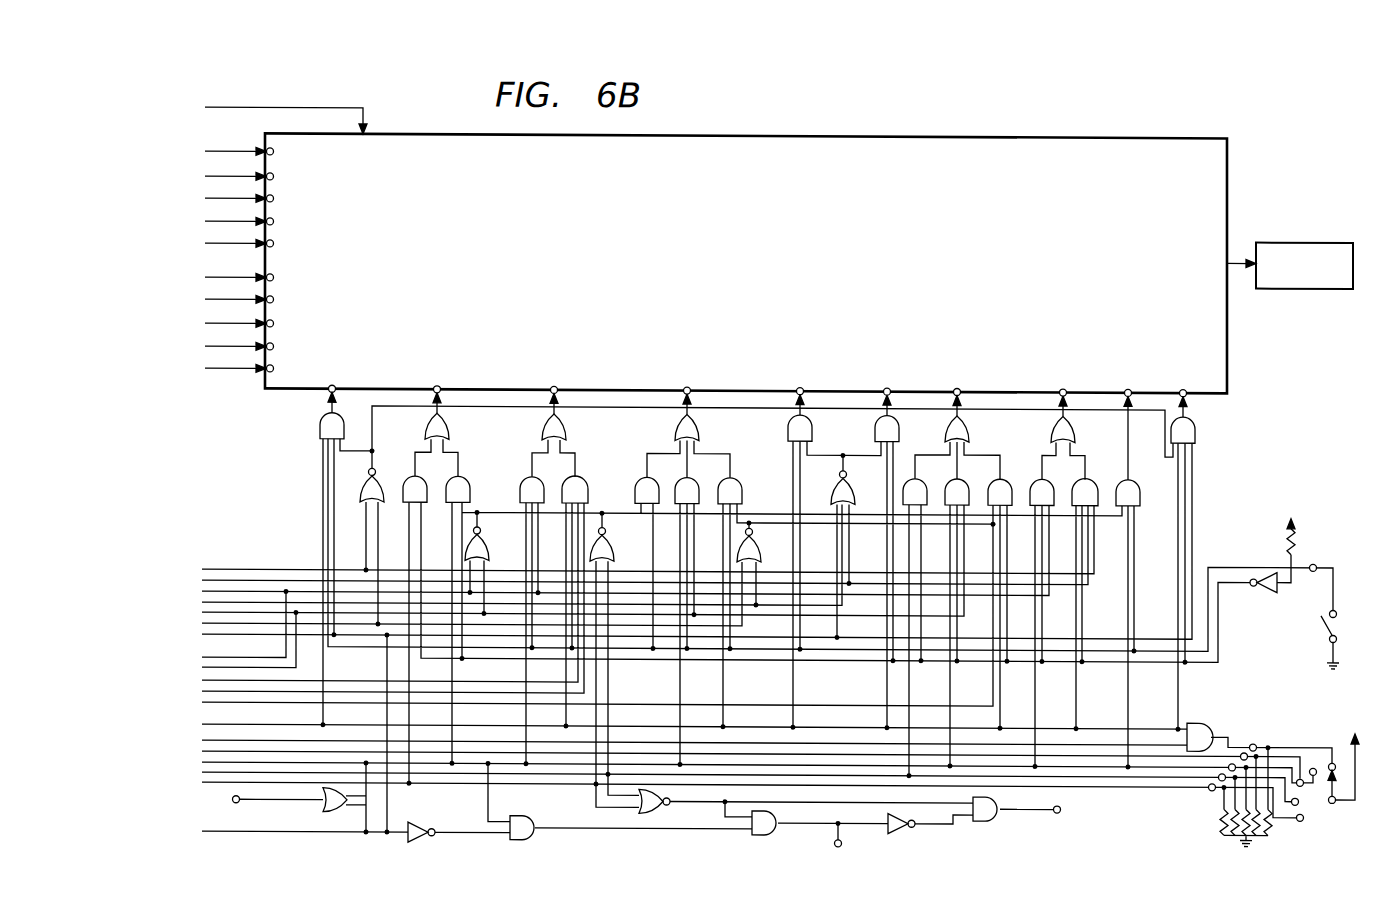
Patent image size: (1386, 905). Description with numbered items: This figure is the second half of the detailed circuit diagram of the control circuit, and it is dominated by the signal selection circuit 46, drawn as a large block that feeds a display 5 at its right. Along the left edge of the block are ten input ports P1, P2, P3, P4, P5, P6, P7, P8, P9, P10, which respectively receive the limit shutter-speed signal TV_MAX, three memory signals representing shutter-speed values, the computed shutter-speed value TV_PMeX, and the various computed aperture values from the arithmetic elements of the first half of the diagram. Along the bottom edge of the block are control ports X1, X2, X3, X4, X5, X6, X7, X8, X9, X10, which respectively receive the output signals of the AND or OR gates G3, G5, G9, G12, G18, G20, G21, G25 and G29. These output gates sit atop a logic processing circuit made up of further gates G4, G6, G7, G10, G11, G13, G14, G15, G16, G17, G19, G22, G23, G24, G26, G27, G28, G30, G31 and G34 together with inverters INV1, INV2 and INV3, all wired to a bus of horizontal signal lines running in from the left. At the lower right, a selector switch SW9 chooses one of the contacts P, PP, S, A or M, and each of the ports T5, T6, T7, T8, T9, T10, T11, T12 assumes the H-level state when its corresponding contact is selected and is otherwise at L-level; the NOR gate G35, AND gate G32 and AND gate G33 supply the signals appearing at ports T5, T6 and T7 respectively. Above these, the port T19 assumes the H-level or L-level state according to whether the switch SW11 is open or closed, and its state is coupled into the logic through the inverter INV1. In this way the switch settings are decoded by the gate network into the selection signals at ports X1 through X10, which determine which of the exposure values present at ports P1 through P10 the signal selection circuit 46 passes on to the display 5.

The signal selection circuit 46 is at (1180, 132).
The display 5 is at (1320, 236).
The AND or OR gate G3 is at (331, 407).
The gate G4 is at (371, 469).
The AND or OR gate G5 is at (447, 427).
The gate G6 is at (412, 469).
The gate G7 is at (458, 469).
The AND or OR gate G9 is at (568, 427).
The gate G10 is at (532, 469).
The gate G11 is at (575, 469).
The AND or OR gate G12 is at (702, 426).
The gate G13 is at (643, 469).
The gate G14 is at (685, 469).
The gate G15 is at (728, 469).
The gate G16 is at (610, 537).
The gate G17 is at (757, 537).
The AND or OR gate G18 is at (814, 426).
The gate G19 is at (843, 469).
The AND or OR gate G20 is at (900, 426).
The AND or OR gate G21 is at (968, 426).
The gate G22 is at (913, 467).
The gate G23 is at (957, 467).
The gate G24 is at (998, 467).
The AND or OR gate G25 is at (1075, 426).
The gate G26 is at (1040, 467).
The gate G27 is at (1083, 467).
The gate G28 is at (1127, 467).
The AND or OR gate G29 is at (1192, 420).
The gate G30 is at (1194, 724).
The gate G31 is at (664, 808).
The AND gate G32 is at (776, 830).
The AND gate G33 is at (993, 818).
The gate G34 is at (530, 817).
The NOR gate G35 is at (333, 812).
The inverter INV1 is at (1266, 588).
The inverter INV2 is at (418, 820).
The inverter INV3 is at (898, 830).
The switch SW9 is at (1332, 797).
The switch SW11 is at (1321, 617).
The port T5 is at (234, 801).
The port T6 is at (842, 840).
The port T7 is at (1057, 809).
The port T8 is at (1255, 736).
The port T9 is at (1244, 746).
The port T10 is at (1229, 763).
The port T11 is at (1220, 775).
The port T12 is at (1212, 785).
The port T19 is at (1316, 553).
The input port P1 is at (250, 152).
The input port P2 is at (250, 177).
The input port P3 is at (250, 199).
The input port P4 is at (250, 222).
The input port P5 is at (250, 244).
The input port P6 is at (250, 278).
The input port P7 is at (250, 300).
The input port P8 is at (250, 324).
The input port P9 is at (250, 347).
The input port P10 is at (254, 369).
The port X1 is at (331, 387).
The port X2 is at (436, 387).
The port X3 is at (553, 388).
The port X4 is at (686, 389).
The port X5 is at (799, 389).
The port X6 is at (886, 390).
The port X7 is at (956, 390).
The port X8 is at (1062, 391).
The port X9 is at (1127, 423).
The port X10 is at (1184, 391).
The contact S is at (1297, 772).
The contact PP is at (1311, 761).
The contact P is at (1333, 756).
The contact M is at (1294, 799).
The contact A is at (1302, 815).